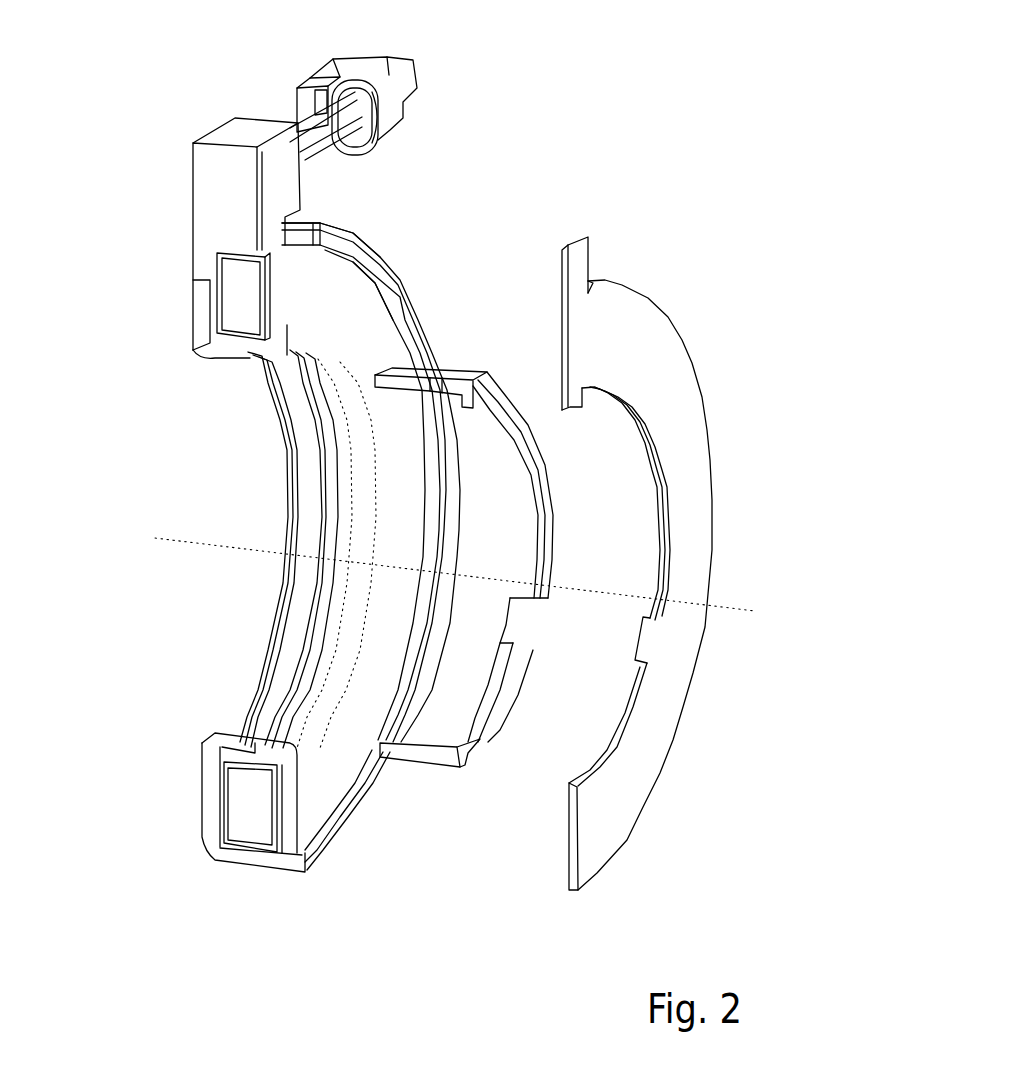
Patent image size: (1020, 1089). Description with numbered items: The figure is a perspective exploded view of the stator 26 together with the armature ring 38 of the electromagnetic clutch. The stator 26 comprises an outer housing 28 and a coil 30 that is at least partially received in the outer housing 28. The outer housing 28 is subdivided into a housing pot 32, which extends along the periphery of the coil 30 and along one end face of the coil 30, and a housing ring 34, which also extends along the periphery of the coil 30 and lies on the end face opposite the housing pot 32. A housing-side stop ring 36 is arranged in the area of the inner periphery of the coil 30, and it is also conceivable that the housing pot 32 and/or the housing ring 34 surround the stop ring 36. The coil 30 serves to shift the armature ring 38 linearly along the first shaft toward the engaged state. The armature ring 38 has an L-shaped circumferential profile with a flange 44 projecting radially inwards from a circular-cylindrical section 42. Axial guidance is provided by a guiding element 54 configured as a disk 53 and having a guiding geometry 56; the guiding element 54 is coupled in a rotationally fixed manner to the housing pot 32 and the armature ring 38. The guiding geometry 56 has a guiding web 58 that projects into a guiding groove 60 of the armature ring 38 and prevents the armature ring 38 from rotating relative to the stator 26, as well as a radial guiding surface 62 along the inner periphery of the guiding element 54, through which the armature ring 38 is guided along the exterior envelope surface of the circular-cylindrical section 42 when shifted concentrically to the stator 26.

The stator 26 is at (118, 124).
The outer housing 28 is at (376, 215).
The coil 30 is at (250, 268).
The housing pot 32 is at (365, 243).
The housing ring 34 is at (375, 297).
The stop ring 36 is at (212, 350).
The armature ring 38 is at (487, 525).
The circular-cylindrical section 42 is at (425, 363).
The flange 44 is at (480, 740).
The disk 53 is at (657, 330).
The guiding element 54 is at (615, 305).
The guiding geometry 56 is at (648, 412).
The guiding web 58 is at (648, 637).
The guiding groove 60 is at (510, 620).
The radial guiding surface 62 is at (663, 570).